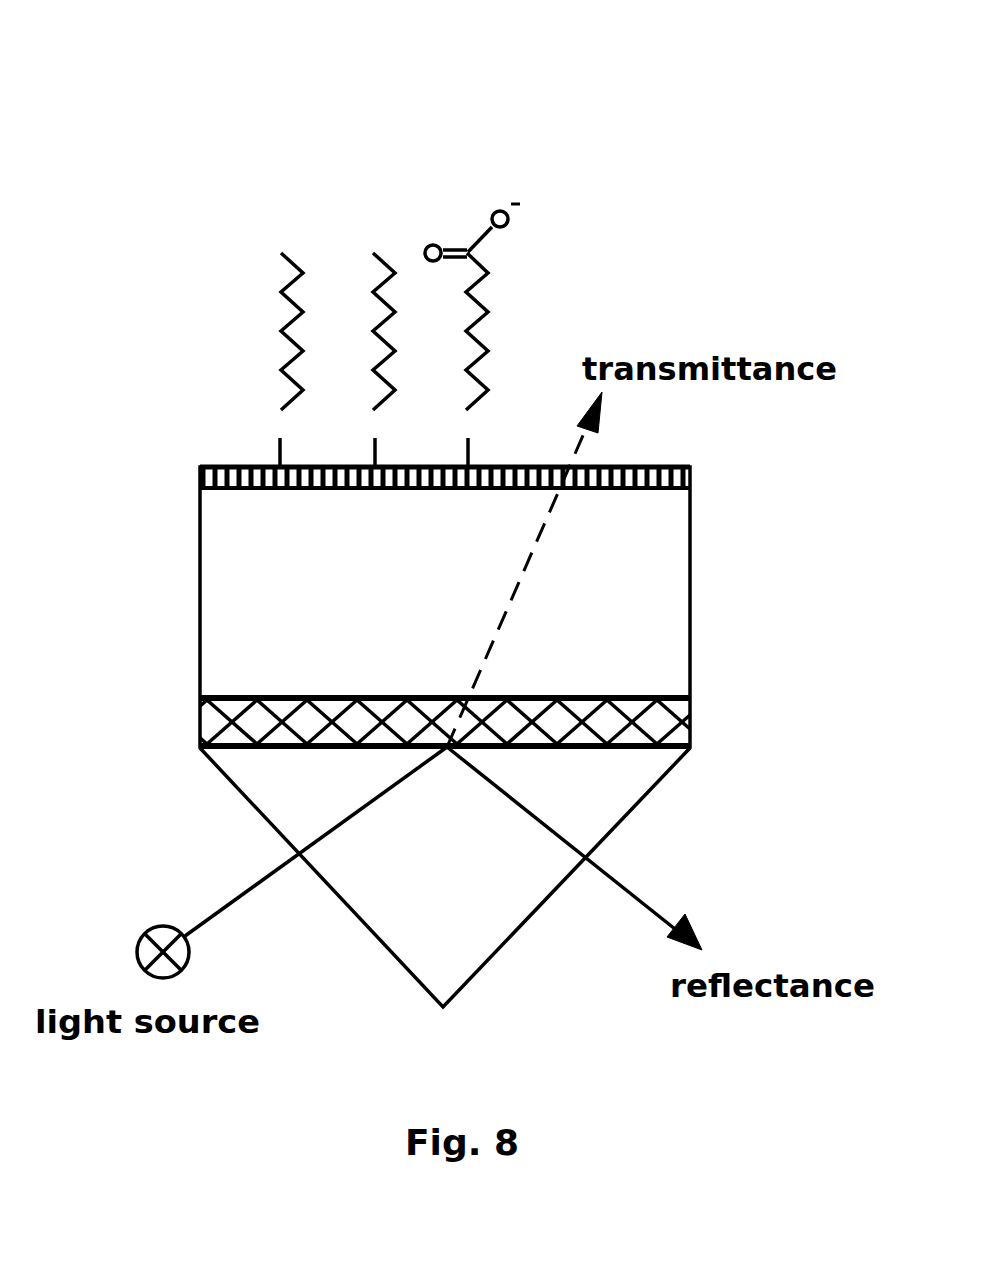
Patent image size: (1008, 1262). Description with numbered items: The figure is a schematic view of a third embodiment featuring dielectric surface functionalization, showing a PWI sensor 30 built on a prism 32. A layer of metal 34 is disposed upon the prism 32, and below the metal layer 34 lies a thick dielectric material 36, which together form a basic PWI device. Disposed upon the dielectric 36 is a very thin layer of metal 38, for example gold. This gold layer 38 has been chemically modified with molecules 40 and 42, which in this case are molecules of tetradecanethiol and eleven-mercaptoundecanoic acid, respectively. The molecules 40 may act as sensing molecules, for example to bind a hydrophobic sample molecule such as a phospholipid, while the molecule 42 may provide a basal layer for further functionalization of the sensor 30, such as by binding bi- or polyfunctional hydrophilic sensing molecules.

The PWI sensor 30 is at (427, 181).
The prism 32 is at (488, 922).
The layer of metal 34 is at (692, 474).
The dielectric material 36 is at (655, 638).
The thin layer of metal 38 is at (692, 722).
The molecules 40 is at (378, 239).
The molecule 42 is at (488, 263).